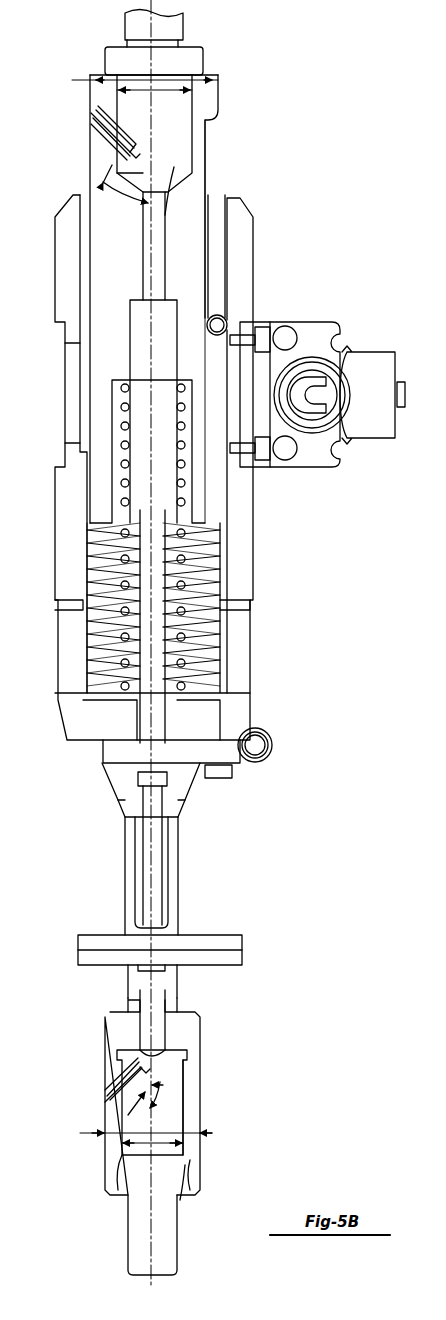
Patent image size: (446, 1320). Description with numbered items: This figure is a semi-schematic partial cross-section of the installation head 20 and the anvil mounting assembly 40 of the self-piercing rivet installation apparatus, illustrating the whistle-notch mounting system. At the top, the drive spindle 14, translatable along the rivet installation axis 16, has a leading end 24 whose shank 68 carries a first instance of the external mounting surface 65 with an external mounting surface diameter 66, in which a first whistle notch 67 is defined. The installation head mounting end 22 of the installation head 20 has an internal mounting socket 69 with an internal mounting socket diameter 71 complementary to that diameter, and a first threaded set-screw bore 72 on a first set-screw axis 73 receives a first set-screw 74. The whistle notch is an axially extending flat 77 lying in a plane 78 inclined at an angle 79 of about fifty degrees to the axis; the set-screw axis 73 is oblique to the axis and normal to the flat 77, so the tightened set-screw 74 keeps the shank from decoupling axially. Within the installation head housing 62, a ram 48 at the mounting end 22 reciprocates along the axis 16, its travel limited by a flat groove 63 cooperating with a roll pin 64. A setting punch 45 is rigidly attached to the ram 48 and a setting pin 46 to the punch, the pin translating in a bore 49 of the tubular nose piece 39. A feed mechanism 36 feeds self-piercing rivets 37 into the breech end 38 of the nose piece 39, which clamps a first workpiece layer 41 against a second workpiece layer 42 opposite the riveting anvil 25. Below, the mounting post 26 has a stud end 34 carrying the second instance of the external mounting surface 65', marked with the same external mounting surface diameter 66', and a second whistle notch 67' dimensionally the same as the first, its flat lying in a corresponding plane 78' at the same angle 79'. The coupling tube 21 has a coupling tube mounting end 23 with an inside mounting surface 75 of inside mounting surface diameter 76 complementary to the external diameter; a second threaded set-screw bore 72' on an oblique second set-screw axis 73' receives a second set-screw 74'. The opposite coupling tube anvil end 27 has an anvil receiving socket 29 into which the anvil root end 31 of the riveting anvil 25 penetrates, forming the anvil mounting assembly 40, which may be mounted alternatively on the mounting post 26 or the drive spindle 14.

The drive spindle 14 is at (192, 60).
The rivet installation axis 16 is at (160, 1284).
The installation head 20 is at (262, 190).
The coupling tube 21 is at (104, 1042).
The installation head mounting end 22 is at (106, 77).
The coupling tube mounting end 23 is at (115, 1190).
The leading end 24 is at (163, 246).
The riveting anvil 25 is at (178, 995).
The mounting post 26 is at (192, 1180).
The coupling tube anvil end 27 is at (128, 1005).
The anvil receiving socket 29 is at (160, 1020).
The anvil root end 31 is at (152, 1058).
The stud end 34 is at (212, 1133).
The feed mechanism 36 is at (240, 768).
The self-piercing rivets 37 is at (140, 760).
The breech end 38 is at (138, 782).
The tubular nose piece 39 is at (180, 872).
The anvil mounting assembly 40 is at (225, 1025).
The first workpiece layer 41 is at (96, 936).
The second workpiece layer 42 is at (90, 962).
The setting punch 45 is at (110, 352).
The setting pin 46 is at (125, 602).
The ram 48 is at (108, 290).
The bore 49 is at (150, 842).
The installation head housing 62 is at (253, 548).
The flat groove 63 is at (206, 150).
The roll pin 64 is at (224, 318).
The external mounting surface 65 is at (180, 199).
The external mounting surface 65' is at (187, 1195).
The external mounting surface diameter 66 is at (130, 57).
The lower width dimension 66' is at (81, 1168).
The first whistle notch 67 is at (90, 167).
The second whistle notch 67' is at (134, 1046).
The shank 68 is at (172, 132).
The internal mounting socket 69 is at (218, 245).
The internal mounting socket diameter 71 is at (164, 92).
The first threaded set-screw bore 72 is at (83, 129).
The second threaded set-screw bore 72' is at (93, 1078).
The first set-screw axis 73 is at (75, 123).
The second set-screw axis 73' is at (89, 1084).
The first set-screw 74 is at (83, 137).
The second set-screw 74' is at (96, 1070).
The inside mounting surface 75 is at (178, 1070).
The inside mounting surface diameter 76 is at (152, 1150).
The axially-extending flat 77 is at (131, 163).
The plane 78 is at (90, 194).
The lower flow direction 78' is at (166, 1105).
The angle 79 is at (113, 204).
The lower flow direction 79' is at (139, 1110).